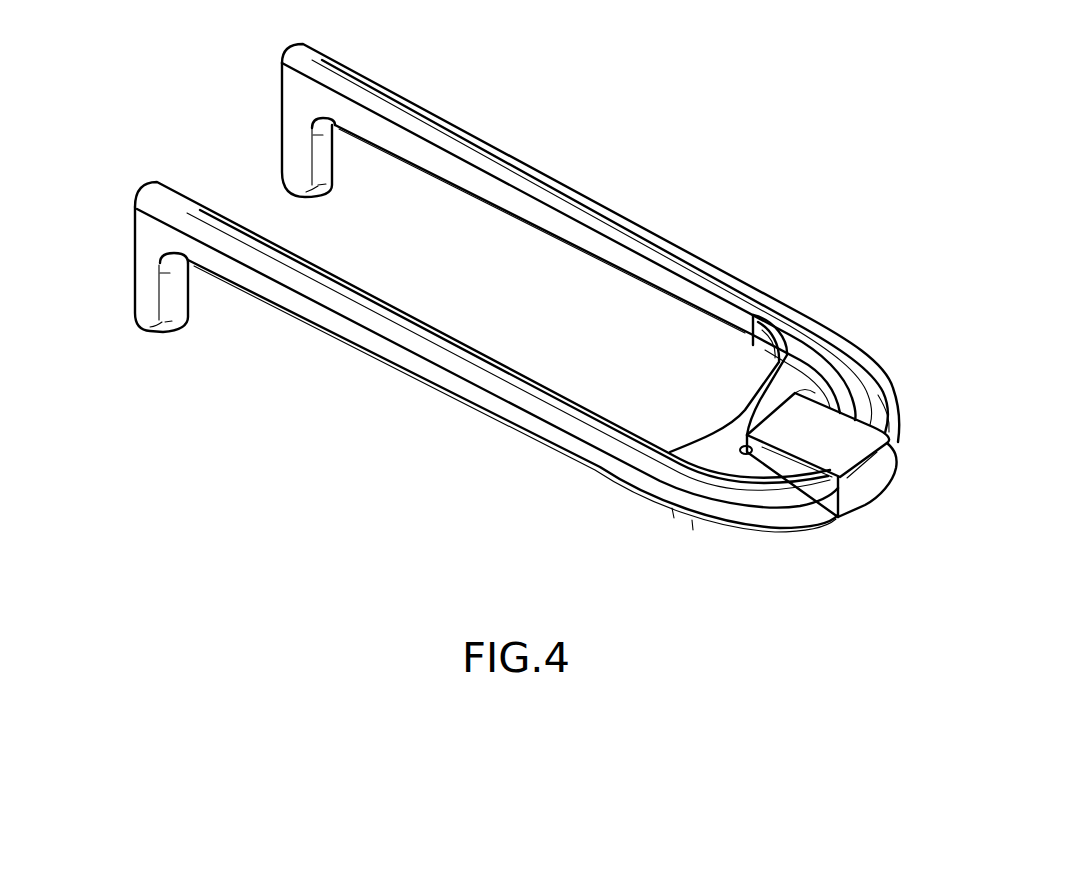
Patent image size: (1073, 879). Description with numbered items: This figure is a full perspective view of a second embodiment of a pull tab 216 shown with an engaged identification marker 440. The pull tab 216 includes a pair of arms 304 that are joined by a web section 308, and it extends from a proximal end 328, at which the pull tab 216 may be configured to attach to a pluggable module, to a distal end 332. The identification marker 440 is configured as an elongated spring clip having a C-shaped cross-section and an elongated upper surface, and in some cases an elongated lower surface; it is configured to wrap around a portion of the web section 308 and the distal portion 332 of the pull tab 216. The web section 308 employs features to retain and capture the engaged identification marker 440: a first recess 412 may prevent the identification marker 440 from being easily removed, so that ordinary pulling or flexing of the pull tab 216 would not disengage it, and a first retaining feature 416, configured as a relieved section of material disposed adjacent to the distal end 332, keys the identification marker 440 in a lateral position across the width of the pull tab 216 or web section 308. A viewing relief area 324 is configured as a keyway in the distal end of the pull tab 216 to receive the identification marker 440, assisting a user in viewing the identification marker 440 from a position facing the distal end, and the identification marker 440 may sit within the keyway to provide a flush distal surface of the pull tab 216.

The pull tab 216 is at (598, 336).
The arms 304 is at (447, 132).
The web section 308 is at (743, 412).
The proximal end 328 is at (268, 45).
The distal end 332 is at (1062, 480).
The viewing relief area 324 is at (910, 507).
The first recess 412 is at (740, 457).
The first retaining feature 416 is at (870, 423).
The identification marker 440 is at (823, 423).